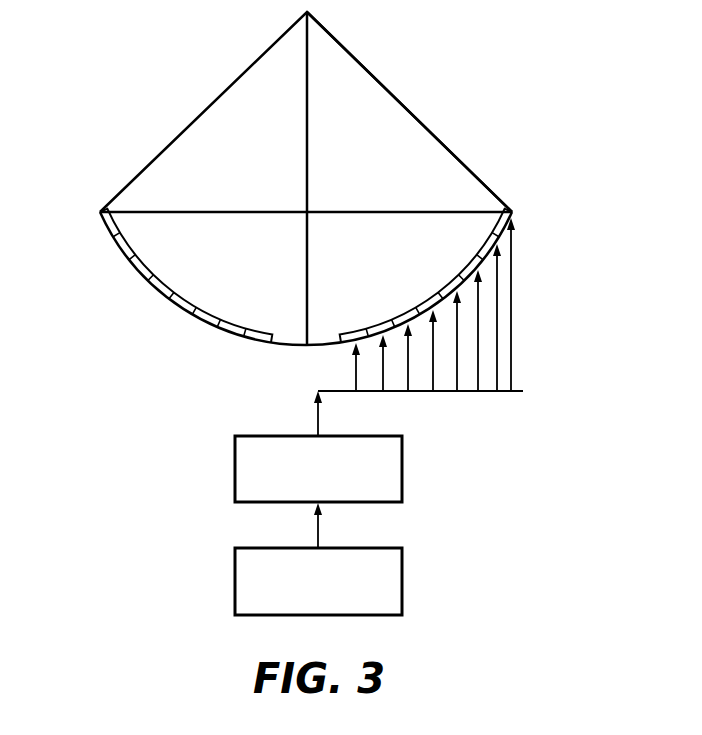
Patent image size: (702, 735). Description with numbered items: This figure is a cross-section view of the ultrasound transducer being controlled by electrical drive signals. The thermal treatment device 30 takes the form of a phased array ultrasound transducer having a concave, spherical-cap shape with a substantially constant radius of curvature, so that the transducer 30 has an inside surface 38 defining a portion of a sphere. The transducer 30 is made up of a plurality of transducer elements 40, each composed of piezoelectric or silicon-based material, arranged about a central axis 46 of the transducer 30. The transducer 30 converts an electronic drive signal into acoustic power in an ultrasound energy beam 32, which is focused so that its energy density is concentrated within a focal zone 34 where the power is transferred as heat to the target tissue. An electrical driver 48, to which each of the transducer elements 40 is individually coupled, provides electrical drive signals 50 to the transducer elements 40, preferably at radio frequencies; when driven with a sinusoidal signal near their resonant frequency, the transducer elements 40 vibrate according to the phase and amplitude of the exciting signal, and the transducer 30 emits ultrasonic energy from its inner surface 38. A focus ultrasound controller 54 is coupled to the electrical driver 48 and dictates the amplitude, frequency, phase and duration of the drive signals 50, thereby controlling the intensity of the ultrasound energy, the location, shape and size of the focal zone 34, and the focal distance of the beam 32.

The thermal treatment device (ultrasound transducer) 30 is at (112, 253).
The energy beam 32 is at (396, 94).
The focal zone 34 is at (310, 13).
The inside surface 38 is at (187, 302).
The transducer elements 40 is at (359, 328).
The central axis 46 is at (308, 132).
The electrical driver 48 is at (403, 462).
The electrical drive signals 50 is at (498, 295).
The focus ultrasound (FUS) controller 54 is at (403, 580).